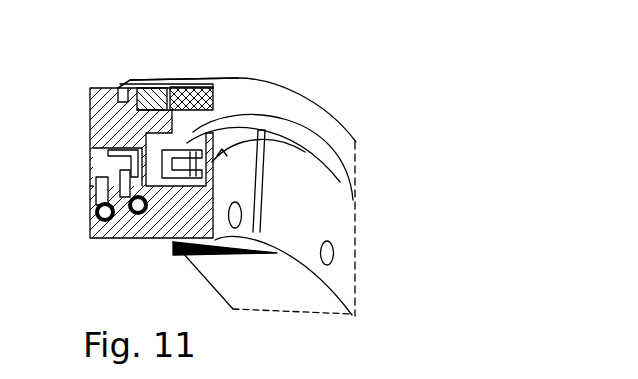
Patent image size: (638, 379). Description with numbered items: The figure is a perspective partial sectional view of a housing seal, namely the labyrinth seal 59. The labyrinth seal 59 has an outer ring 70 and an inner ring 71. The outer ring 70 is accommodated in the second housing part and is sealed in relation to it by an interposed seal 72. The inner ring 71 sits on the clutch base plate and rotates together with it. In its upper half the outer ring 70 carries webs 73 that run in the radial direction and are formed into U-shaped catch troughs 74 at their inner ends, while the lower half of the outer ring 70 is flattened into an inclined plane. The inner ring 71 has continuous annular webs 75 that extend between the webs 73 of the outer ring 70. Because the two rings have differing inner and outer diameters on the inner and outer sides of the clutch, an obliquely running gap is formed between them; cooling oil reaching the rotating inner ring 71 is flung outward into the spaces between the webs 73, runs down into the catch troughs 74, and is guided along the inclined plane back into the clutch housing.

The labyrinth seal 59 is at (99, 244).
The outer ring 70 is at (90, 93).
The inner ring 71 is at (180, 212).
The seal 72 is at (160, 84).
The webs 73 is at (172, 100).
The U-shaped catch troughs 74 is at (305, 92).
The annular webs 75 is at (176, 163).